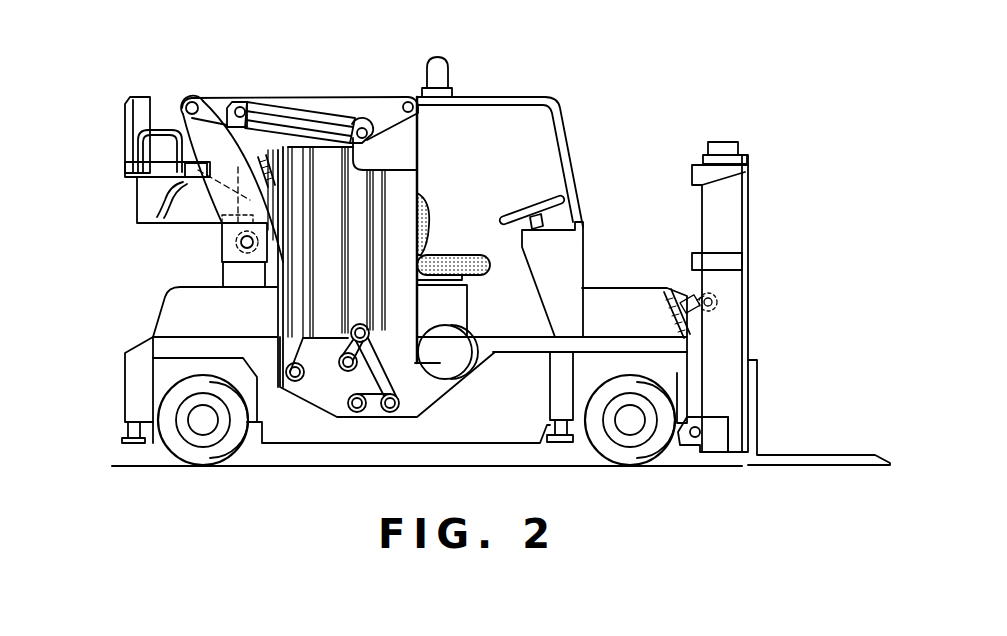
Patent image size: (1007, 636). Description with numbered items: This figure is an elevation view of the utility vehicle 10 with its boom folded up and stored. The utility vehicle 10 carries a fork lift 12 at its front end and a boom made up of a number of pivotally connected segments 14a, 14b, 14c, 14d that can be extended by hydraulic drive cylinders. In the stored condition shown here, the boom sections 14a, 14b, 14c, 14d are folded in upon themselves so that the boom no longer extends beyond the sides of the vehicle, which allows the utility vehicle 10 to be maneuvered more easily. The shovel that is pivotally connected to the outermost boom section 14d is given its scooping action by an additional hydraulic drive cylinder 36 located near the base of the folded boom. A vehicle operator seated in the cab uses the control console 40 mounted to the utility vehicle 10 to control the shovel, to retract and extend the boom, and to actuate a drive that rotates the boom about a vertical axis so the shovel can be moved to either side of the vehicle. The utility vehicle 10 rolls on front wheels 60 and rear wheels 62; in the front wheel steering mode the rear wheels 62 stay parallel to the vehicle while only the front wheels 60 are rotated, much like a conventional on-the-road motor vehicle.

The utility vehicle 10 is at (618, 128).
The fork lift 12 is at (725, 216).
The boom segment 14a is at (227, 187).
The boom segment 14b is at (340, 106).
The boom segment 14c is at (403, 183).
The outermost boom section 14d is at (327, 268).
The hydraulic drive cylinder 36 is at (292, 348).
The control console 40 is at (519, 215).
The front wheels 60 is at (633, 453).
The rear wheels 62 is at (203, 453).